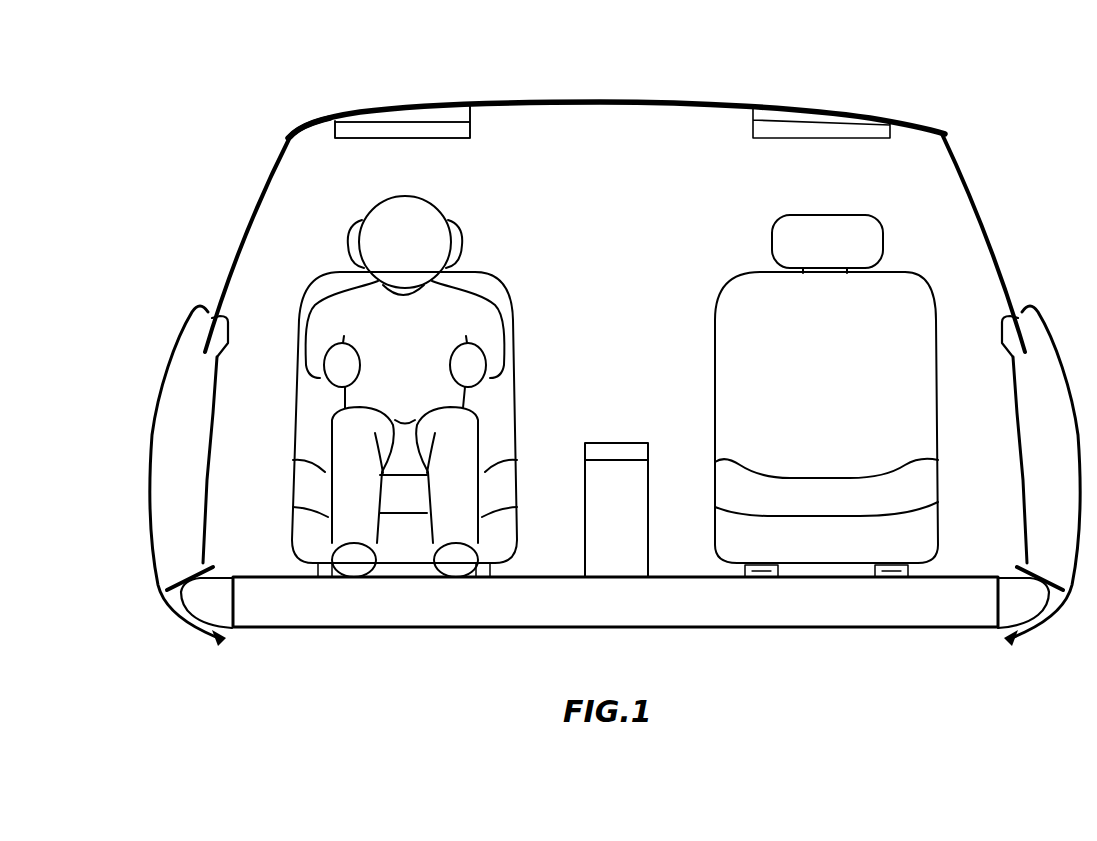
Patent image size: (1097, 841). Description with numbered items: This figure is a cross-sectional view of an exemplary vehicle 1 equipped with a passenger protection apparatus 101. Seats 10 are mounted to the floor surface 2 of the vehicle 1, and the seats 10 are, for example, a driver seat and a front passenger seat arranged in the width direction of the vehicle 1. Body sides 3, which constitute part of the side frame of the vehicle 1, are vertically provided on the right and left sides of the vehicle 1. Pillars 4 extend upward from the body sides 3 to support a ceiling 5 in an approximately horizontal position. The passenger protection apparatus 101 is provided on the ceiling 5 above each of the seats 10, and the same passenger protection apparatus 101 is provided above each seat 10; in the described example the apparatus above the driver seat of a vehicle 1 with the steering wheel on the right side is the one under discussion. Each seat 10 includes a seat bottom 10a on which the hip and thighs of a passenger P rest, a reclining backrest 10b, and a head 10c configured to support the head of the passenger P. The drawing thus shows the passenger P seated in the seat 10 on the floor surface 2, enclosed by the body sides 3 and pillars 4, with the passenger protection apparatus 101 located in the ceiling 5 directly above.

The vehicle 1 is at (904, 94).
The floor surface 2 is at (323, 612).
The body side 3 is at (172, 535).
The pillar 4 is at (245, 229).
The ceiling 5 is at (320, 123).
The passenger protection apparatus 101 is at (460, 130).
The seat 10 is at (452, 398).
The seat bottom 10a is at (507, 482).
The backrest 10b is at (510, 350).
The head 10c is at (460, 244).
The passenger P is at (435, 206).